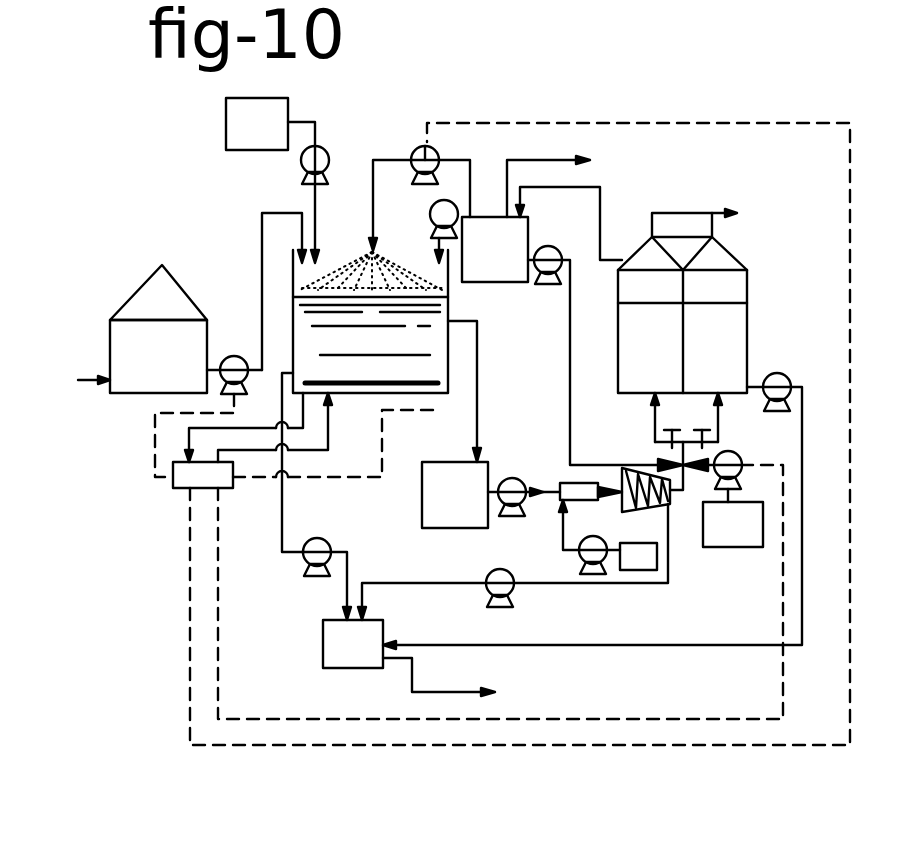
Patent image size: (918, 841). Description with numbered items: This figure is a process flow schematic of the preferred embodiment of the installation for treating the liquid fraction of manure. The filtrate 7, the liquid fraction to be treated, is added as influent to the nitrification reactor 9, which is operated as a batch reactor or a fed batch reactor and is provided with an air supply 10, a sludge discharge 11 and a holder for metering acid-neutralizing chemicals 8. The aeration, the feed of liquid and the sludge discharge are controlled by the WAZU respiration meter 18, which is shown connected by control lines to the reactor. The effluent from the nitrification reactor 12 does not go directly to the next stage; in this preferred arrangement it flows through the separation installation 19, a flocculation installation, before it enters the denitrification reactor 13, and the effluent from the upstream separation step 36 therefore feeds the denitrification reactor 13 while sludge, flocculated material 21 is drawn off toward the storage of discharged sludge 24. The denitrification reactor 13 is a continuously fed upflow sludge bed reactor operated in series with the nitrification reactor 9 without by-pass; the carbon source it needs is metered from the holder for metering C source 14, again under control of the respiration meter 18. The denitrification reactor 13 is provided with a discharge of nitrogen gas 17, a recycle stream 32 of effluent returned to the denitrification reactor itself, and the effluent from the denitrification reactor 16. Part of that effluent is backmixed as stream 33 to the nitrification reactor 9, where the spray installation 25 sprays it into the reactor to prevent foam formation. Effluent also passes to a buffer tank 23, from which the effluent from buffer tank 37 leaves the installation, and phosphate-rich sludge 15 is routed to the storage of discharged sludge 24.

The filtrate 7 is at (115, 354).
The holder for metering acid-neutralizing chemicals 8 is at (318, 106).
The nitrification reactor 9 is at (343, 352).
The air supply 10 is at (440, 410).
The sludge discharge 11 is at (296, 501).
The effluent from the nitrification reactor 12 is at (477, 434).
The denitrification reactor 13 is at (672, 312).
The holder for metering C source 14 is at (738, 540).
The phosphate-rich sludge 15 is at (803, 508).
The effluent from the denitrification reactor 16 is at (601, 223).
The nitrogen gas 17 is at (700, 210).
The WAZU respiration meter 18 is at (184, 480).
The separation installation 19 is at (549, 456).
The sludge, flocculated material 21 is at (535, 588).
The buffer tank 23 is at (497, 272).
The storage of discharged sludge 24 is at (323, 645).
The spray installation 25 is at (372, 248).
The effluent recycling to the denitrification reactor 32 is at (571, 360).
The effluent recycling to the nitrification reactor 33 is at (406, 145).
The effluent from the upstream separation step 36 is at (686, 493).
The effluent from buffer tank 37 is at (554, 147).